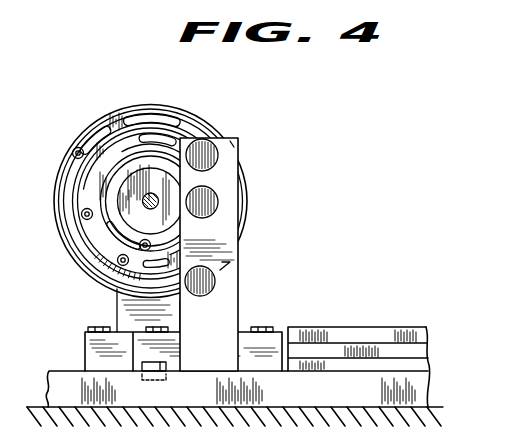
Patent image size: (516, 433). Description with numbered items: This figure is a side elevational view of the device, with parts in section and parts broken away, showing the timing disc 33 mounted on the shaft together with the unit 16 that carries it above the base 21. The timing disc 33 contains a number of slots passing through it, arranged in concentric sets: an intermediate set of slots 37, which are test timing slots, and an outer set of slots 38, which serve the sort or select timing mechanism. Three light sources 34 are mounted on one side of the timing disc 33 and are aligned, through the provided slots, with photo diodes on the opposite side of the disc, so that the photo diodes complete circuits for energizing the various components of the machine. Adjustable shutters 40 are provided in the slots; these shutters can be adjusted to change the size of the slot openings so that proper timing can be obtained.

The control unit 16 is at (175, 226).
The base 21 is at (64, 371).
The timing disc 33 is at (143, 202).
The light sources 34 is at (218, 197).
The intermediate set of slots 37 is at (163, 135).
The outer set of slots 38 is at (83, 250).
The adjustable shutters 40 is at (74, 147).